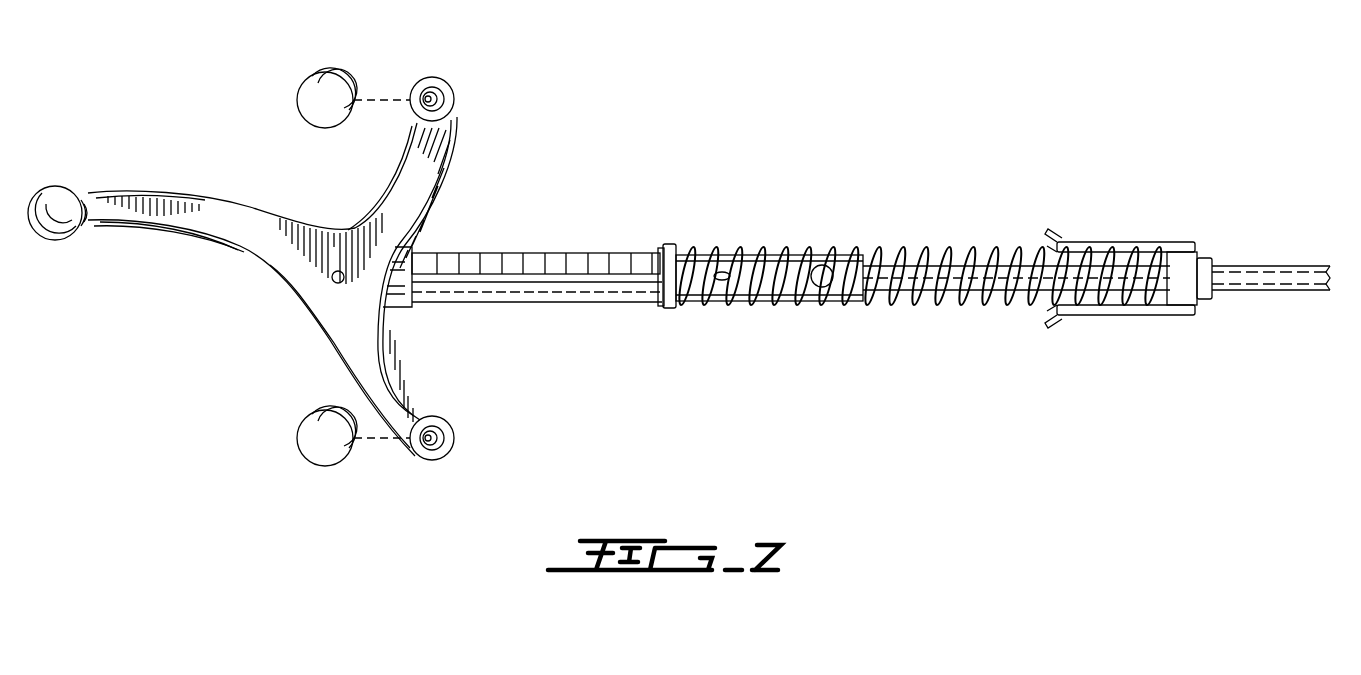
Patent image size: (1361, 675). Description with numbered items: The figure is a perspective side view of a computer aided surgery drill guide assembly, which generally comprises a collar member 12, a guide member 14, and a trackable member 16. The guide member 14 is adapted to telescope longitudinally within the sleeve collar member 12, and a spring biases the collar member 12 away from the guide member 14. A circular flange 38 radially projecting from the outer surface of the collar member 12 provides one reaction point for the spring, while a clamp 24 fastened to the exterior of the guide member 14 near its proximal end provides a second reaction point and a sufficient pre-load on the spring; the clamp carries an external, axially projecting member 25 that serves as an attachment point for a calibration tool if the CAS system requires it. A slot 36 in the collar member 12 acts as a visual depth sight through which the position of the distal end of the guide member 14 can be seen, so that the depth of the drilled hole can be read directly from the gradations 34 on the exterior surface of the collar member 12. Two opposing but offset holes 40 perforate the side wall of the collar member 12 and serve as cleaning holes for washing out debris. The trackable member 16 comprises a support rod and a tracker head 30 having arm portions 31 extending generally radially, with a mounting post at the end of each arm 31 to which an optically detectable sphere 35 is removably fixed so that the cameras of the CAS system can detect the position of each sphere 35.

The collar member 12 is at (626, 293).
The guide member 14 is at (1292, 274).
The trackable member 16 is at (340, 207).
The clamp 24 is at (1180, 250).
The axially projecting member 25 is at (1109, 244).
The tracker head 30 is at (347, 289).
The arm portions 31 is at (220, 217).
The gradations 34 is at (543, 262).
The optically detectable sphere 35 is at (56, 216).
The slot 36 is at (565, 282).
The circular flange 38 is at (665, 244).
The holes 40 is at (830, 288).